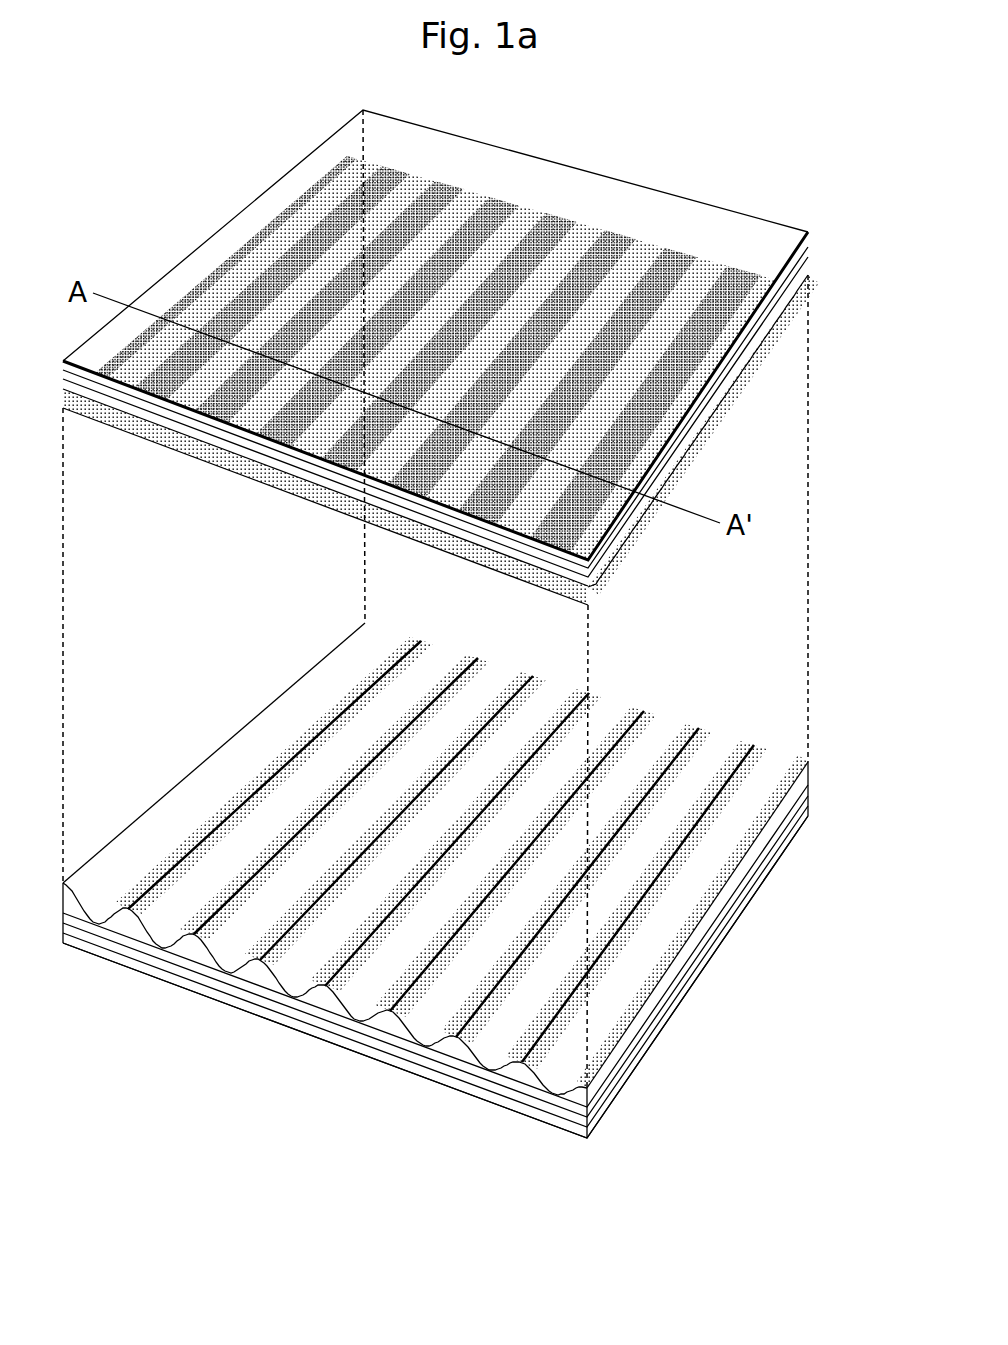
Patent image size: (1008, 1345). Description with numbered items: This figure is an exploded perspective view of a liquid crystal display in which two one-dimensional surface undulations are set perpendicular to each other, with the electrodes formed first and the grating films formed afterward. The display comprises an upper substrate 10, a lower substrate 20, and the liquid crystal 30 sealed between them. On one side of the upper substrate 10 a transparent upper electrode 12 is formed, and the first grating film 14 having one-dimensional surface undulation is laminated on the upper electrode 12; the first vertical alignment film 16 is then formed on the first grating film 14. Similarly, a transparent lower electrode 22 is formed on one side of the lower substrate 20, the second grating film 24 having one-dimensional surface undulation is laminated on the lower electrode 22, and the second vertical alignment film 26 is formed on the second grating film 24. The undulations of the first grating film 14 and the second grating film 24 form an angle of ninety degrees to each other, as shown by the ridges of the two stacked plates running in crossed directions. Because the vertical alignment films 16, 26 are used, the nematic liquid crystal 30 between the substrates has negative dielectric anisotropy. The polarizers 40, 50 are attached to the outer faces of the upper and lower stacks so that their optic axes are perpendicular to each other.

The polarizer 40 is at (805, 233).
The upper substrate 10 is at (807, 250).
The upper electrode 12 is at (807, 260).
The first grating film 14 is at (808, 273).
The first vertical alignment film 16 is at (802, 282).
The liquid crystal 30 is at (767, 608).
The second vertical alignment film 26 is at (793, 760).
The second grating film 24 is at (808, 787).
The lower electrode 22 is at (808, 800).
The lower substrate 20 is at (808, 808).
The polarizer 50 is at (788, 848).